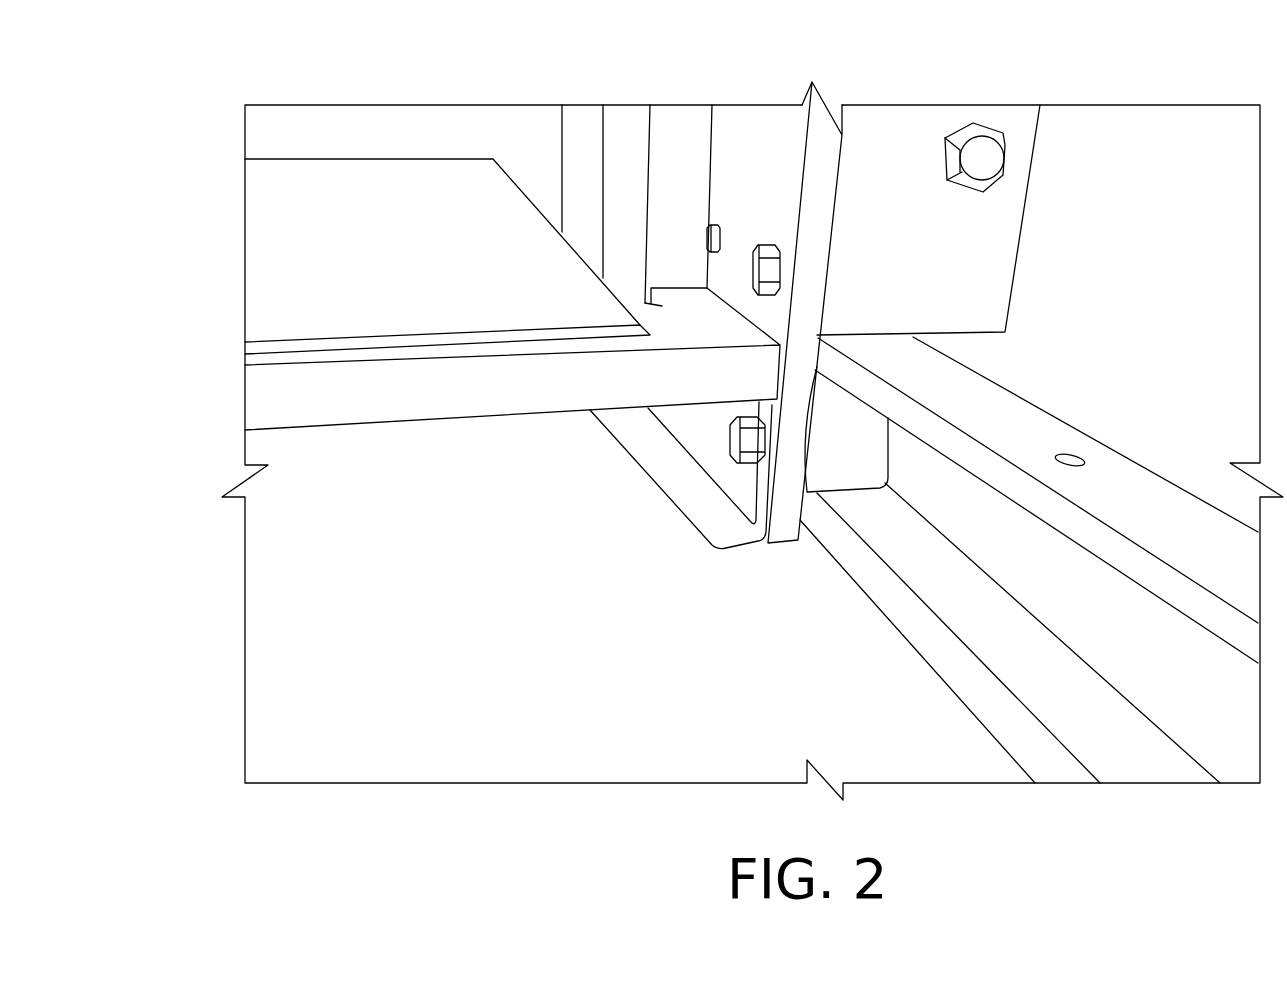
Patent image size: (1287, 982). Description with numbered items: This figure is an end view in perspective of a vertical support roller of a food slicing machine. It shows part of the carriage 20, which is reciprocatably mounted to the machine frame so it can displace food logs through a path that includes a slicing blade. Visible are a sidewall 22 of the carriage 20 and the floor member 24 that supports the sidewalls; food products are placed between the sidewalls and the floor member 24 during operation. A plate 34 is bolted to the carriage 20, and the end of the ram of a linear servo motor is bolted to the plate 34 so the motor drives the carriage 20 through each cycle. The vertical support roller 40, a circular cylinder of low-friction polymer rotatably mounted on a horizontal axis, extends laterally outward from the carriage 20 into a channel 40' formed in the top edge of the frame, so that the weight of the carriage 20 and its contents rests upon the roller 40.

The carriage 20 is at (410, 196).
The sidewall 22 is at (812, 188).
The floor member 24 is at (264, 393).
The plate 34 is at (972, 242).
The vertical support roller 40 is at (820, 262).
The channel 40' is at (975, 560).